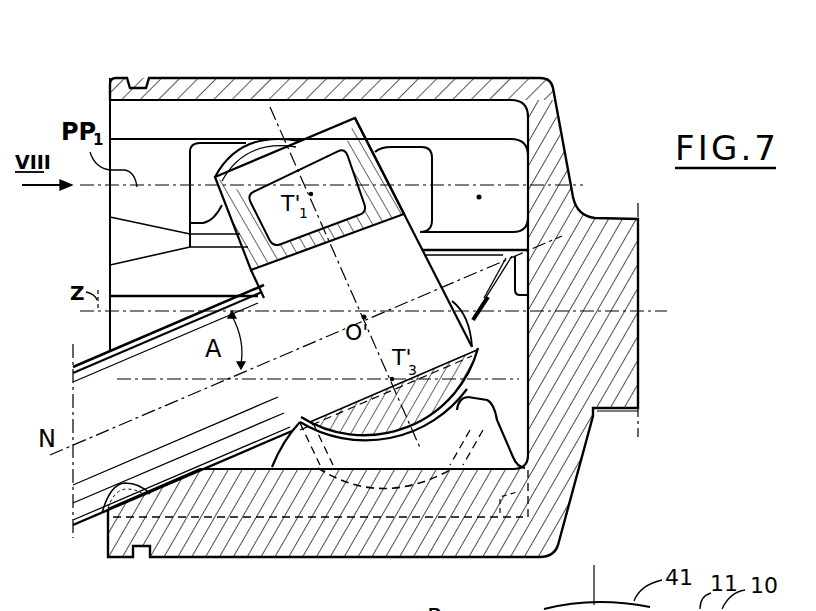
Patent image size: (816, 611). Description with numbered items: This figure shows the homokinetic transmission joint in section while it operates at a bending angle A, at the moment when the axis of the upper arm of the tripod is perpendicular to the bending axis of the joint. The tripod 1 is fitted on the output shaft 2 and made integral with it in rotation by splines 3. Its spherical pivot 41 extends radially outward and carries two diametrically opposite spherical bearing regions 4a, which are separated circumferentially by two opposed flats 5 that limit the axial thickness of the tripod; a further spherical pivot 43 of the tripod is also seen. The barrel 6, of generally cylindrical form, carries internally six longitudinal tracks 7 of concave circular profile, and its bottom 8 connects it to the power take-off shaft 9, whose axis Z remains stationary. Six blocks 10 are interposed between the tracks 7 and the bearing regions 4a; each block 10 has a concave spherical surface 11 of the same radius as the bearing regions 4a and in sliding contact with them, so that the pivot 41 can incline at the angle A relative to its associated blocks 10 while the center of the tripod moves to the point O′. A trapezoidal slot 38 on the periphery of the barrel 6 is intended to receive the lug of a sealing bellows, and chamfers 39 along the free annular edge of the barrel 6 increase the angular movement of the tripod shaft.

The tripod 1 is at (459, 361).
The shaft 2 is at (88, 361).
The splines 3 is at (405, 187).
The spherical bearing regions 4a is at (463, 396).
The flats 5 is at (190, 187).
The barrel 6 is at (298, 70).
The tracks 7 is at (497, 566).
The bottom 8 is at (563, 122).
The shaft 9 is at (617, 219).
The blocks 10 is at (429, 137).
The concave spherical surface 11 is at (268, 107).
The trapezoidal slot 38 is at (135, 83).
The chamfers 39 is at (128, 235).
The spherical pivot 41 is at (333, 108).
The spherical pivot 43 is at (577, 424).